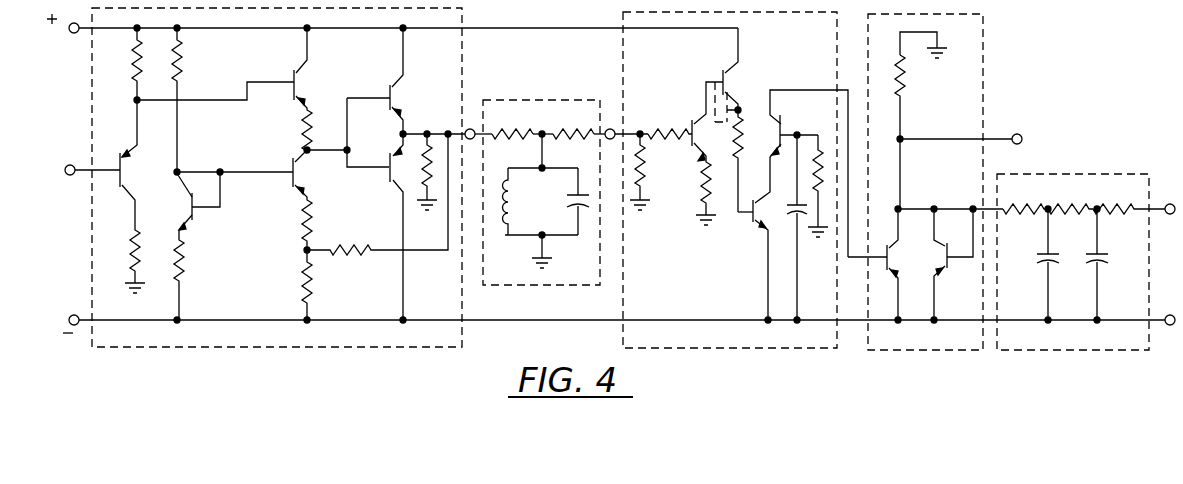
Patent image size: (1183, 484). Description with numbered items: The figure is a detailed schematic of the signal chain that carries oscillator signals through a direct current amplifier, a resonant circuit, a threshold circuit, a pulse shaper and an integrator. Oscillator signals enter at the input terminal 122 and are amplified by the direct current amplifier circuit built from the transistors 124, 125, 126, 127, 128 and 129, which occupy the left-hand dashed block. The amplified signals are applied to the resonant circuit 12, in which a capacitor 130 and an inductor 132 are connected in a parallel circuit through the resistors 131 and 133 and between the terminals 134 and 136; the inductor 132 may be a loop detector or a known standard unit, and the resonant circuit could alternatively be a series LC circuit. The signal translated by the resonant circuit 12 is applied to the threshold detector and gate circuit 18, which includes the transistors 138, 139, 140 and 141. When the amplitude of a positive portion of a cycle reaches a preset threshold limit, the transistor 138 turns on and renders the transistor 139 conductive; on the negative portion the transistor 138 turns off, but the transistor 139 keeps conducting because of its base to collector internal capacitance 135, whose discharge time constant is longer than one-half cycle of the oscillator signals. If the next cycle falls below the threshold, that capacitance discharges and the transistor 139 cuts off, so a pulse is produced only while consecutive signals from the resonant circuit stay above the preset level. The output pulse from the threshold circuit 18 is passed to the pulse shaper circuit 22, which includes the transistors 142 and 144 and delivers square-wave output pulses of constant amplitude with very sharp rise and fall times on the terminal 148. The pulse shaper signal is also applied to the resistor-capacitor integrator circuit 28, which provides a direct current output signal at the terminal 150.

The resonant circuit 12 is at (540, 179).
The threshold detector and gate circuit 18 is at (731, 205).
The pulse shaper circuit 22 is at (941, 182).
The resistor-capacitor integrator circuit 28 is at (1033, 176).
The input terminal 122 is at (68, 169).
The transistor 124 is at (146, 196).
The transistor 125 is at (190, 207).
The transistor 126 is at (299, 69).
The transistor 127 is at (292, 174).
The transistor 128 is at (392, 97).
The transistor 129 is at (388, 170).
The capacitor 130 is at (570, 208).
The resistor 131 is at (511, 131).
The inductor 132 is at (515, 217).
The resistor 133 is at (568, 131).
The terminal 134 is at (471, 128).
The base to collector internal capacitance 135 is at (740, 88).
The terminal 136 is at (610, 128).
The transistor 138 is at (692, 122).
The transistor 139 is at (729, 73).
The transistor 140 is at (784, 112).
The transistor 141 is at (750, 216).
The transistor 142 is at (890, 247).
The transistor 144 is at (938, 240).
The terminal 148 is at (1018, 134).
The terminal 150 is at (1170, 203).